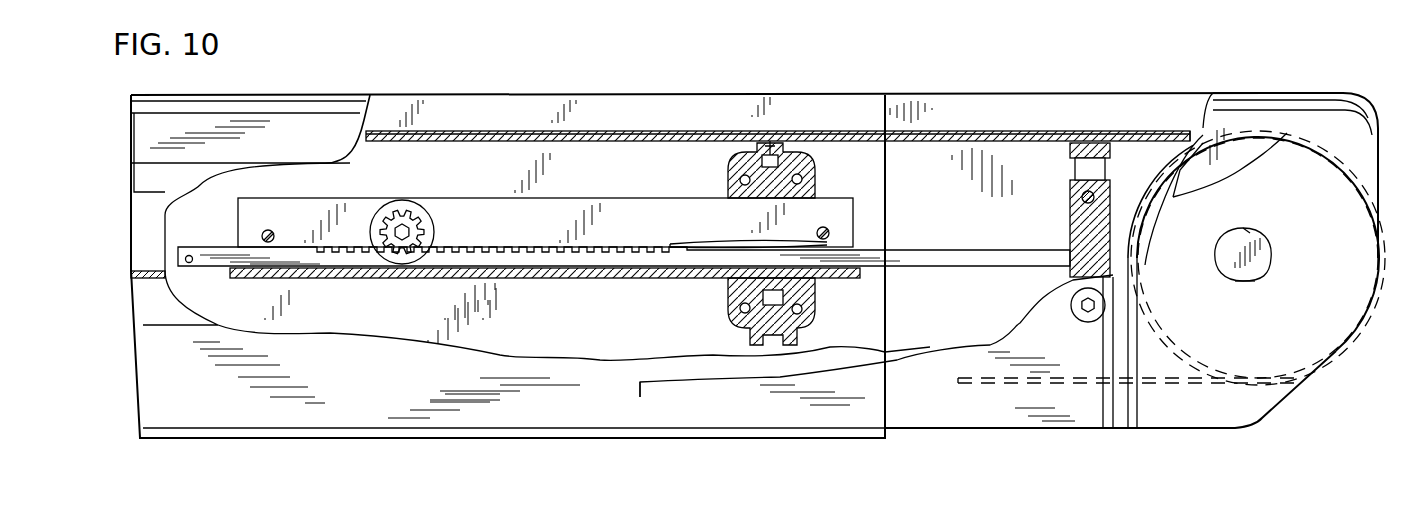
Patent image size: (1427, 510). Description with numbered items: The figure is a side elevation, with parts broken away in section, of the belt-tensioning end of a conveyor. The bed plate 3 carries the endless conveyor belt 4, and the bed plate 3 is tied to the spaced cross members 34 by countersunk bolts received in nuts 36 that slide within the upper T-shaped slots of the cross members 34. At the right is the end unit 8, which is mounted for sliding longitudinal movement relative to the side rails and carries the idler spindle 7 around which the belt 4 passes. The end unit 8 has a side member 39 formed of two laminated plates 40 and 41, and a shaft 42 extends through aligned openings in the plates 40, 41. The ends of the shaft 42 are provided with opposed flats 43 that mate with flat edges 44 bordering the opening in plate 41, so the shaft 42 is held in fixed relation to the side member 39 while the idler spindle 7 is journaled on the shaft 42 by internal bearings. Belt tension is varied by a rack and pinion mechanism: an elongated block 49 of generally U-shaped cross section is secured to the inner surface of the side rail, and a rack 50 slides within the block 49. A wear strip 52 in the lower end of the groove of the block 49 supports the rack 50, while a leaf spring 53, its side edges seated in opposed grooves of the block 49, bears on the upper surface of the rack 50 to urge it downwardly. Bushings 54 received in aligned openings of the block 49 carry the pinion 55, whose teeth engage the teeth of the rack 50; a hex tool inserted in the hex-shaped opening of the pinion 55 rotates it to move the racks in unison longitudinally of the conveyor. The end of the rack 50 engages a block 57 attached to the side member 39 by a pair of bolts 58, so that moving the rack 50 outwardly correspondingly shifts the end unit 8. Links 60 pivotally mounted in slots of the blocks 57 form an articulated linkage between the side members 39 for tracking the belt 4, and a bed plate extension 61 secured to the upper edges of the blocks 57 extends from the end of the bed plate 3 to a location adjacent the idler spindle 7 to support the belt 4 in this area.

The bed plate 3 is at (842, 130).
The endless conveyor belt 4 is at (925, 131).
The idler spindle 7 is at (1330, 213).
The end unit 8 is at (1158, 90).
The cross member 34 is at (815, 186).
The nut 36 is at (768, 146).
The side member 39 is at (1180, 432).
The laminated plate 40 is at (1365, 127).
The laminated plate 41 is at (970, 410).
The shaft 42 is at (1268, 262).
The flat 43 is at (1245, 282).
The flat edge 44 is at (1248, 232).
The elongated block 49 is at (593, 206).
The rack 50 is at (635, 246).
The wear strip 52 is at (882, 279).
The leaf spring 53 is at (736, 238).
The bushing 54 is at (432, 220).
The pinion 55 is at (406, 201).
The block 57 is at (1082, 229).
The bolt 58 is at (1113, 195).
The link 60 is at (1080, 167).
The bed plate extension 61 is at (931, 142).